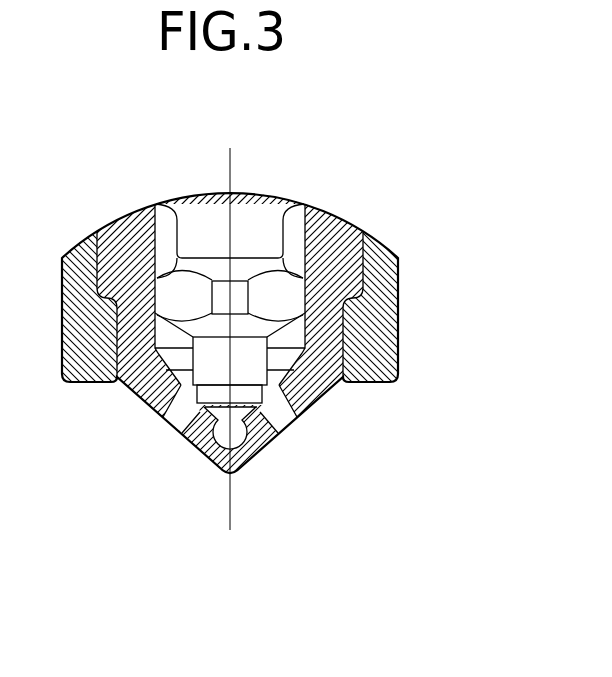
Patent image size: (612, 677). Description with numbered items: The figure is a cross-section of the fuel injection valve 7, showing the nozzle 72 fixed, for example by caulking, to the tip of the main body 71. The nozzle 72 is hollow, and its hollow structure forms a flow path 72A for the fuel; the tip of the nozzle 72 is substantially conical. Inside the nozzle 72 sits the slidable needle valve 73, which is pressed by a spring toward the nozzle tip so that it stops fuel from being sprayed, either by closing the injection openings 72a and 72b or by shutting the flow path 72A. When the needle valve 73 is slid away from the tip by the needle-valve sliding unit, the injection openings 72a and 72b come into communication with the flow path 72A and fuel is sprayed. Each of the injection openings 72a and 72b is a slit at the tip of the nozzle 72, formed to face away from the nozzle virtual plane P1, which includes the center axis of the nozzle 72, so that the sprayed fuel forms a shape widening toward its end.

The fuel injection valve 7 is at (422, 190).
The main body 71 is at (399, 275).
The nozzle 72 is at (318, 401).
The flow path 72A is at (289, 200).
The injection opening 72a is at (181, 431).
The injection opening 72b is at (279, 431).
The needle valve 73 is at (163, 202).
The nozzle virtual plane P1 is at (230, 526).